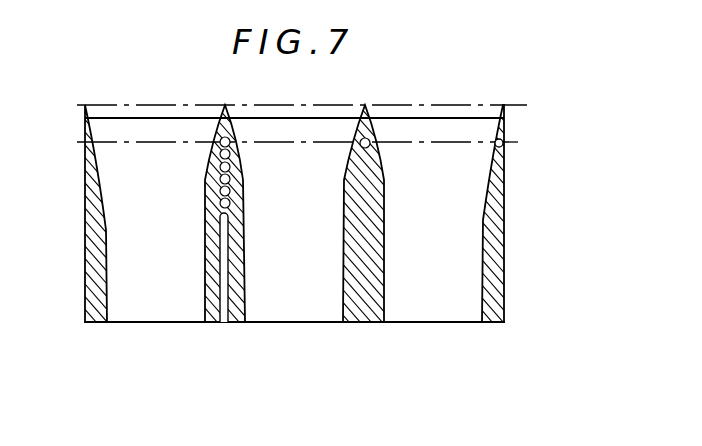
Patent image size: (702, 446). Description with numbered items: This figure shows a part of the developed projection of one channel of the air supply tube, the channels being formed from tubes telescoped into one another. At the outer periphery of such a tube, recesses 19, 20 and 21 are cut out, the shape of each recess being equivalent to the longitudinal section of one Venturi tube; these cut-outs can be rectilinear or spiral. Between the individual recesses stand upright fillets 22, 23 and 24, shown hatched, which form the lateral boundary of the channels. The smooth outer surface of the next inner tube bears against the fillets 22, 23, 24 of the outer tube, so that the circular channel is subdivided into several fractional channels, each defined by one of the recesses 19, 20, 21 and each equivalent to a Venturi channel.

The recess 19 is at (205, 252).
The recess 20 is at (343, 260).
The recess 21 is at (482, 250).
The upright fillet 22 is at (97, 315).
The upright fillet 23 is at (213, 315).
The upright fillet 24 is at (367, 315).